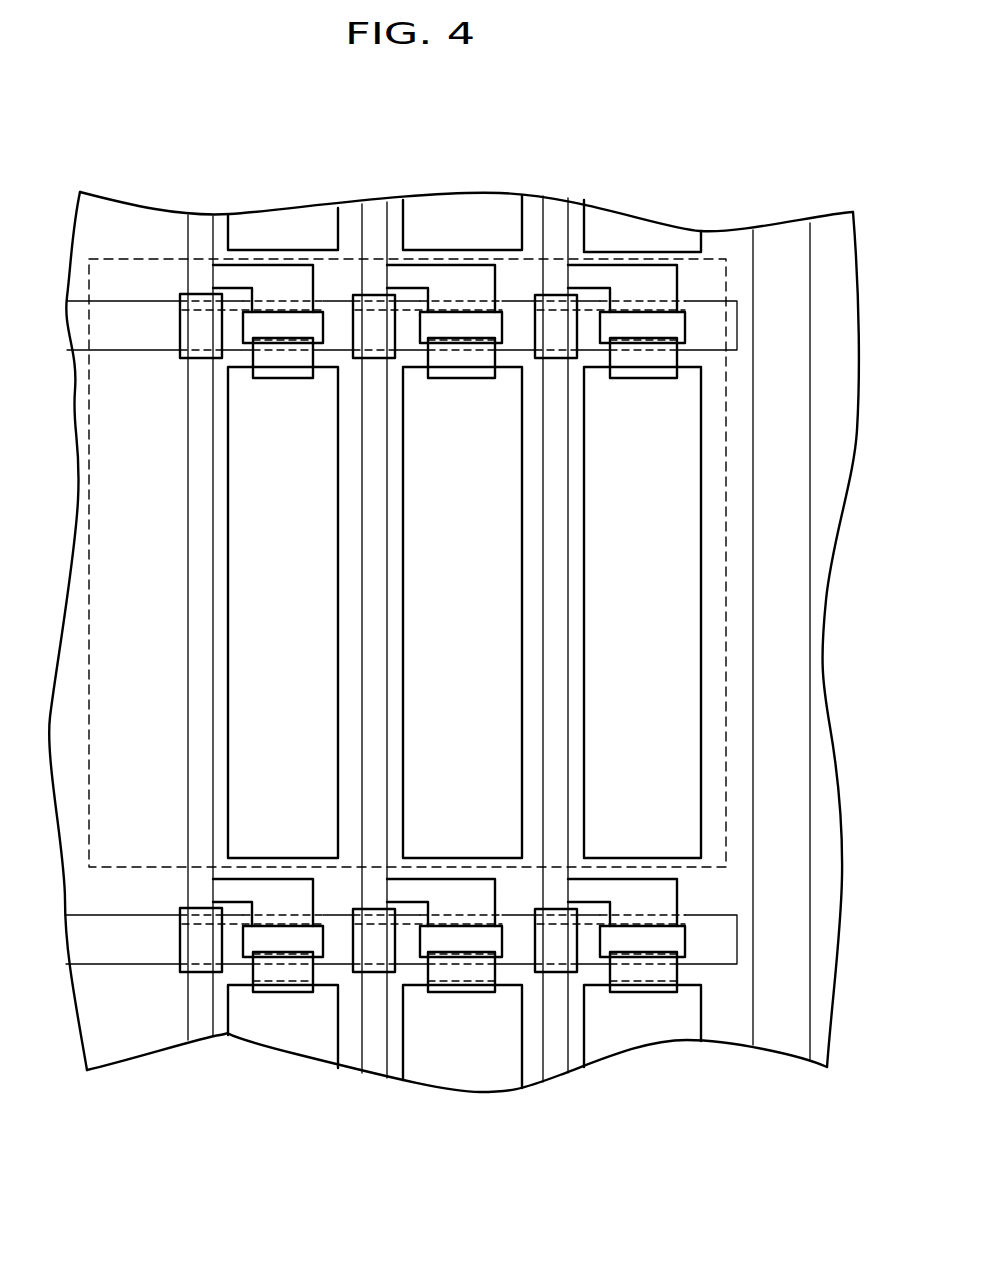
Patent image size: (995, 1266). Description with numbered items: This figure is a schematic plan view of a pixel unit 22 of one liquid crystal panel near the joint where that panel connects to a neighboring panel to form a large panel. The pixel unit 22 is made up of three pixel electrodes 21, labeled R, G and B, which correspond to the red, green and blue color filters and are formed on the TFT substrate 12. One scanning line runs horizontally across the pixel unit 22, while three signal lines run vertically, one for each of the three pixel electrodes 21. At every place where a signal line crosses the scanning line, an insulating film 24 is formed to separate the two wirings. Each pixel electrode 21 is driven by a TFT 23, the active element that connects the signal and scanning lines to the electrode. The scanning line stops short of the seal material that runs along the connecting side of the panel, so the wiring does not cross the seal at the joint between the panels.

The pixel unit 22 is at (107, 259).
The TFT 23 is at (273, 317).
The insulating film 24 is at (397, 311).
The pixel electrode 21 is at (242, 458).
The TFT substrate 12 is at (733, 240).